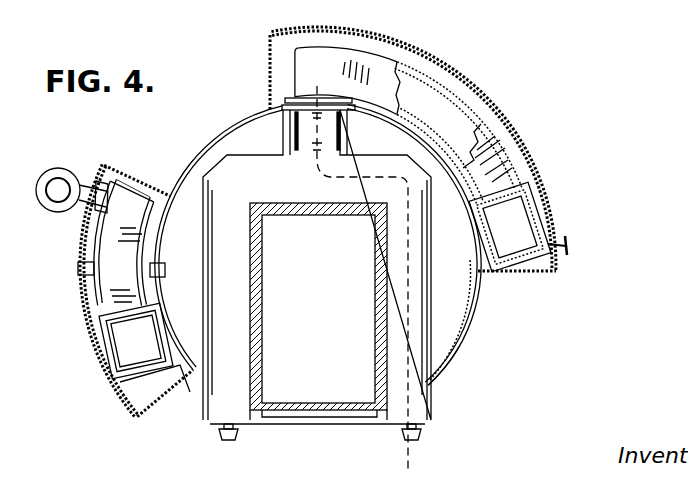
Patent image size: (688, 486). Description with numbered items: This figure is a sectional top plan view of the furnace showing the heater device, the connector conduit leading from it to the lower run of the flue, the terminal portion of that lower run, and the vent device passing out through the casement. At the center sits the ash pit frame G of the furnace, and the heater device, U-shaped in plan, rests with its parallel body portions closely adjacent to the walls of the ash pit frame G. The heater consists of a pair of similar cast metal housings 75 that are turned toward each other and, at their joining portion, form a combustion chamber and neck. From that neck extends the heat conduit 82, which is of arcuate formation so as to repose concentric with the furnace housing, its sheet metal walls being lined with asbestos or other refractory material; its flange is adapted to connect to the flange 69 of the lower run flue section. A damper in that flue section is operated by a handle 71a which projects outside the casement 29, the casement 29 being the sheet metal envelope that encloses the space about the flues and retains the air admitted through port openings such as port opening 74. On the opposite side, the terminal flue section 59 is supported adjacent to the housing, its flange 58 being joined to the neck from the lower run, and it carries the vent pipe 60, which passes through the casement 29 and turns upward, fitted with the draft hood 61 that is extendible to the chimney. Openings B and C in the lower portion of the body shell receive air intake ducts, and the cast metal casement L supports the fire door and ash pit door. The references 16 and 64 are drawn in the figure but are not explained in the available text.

The section line 16 is at (365, 276).
The casement shell 29 is at (540, 156).
The flange 58 is at (115, 365).
The terminal flue section 59 is at (100, 303).
The vent pipe 60 is at (88, 213).
The draft hood 61 is at (36, 195).
The insulation band 64 is at (465, 112).
The flange 69 is at (540, 208).
The handle 71a is at (570, 241).
The port opening 74 is at (403, 125).
The cast metal housing 75 is at (431, 255).
The heat conduit 82 is at (492, 155).
The opening C is at (183, 168).
The ash pit frame G is at (265, 288).
The casement L is at (265, 412).
The opening B is at (458, 353).